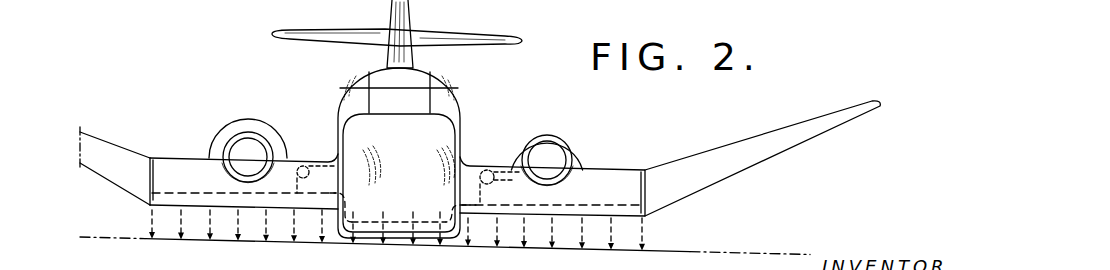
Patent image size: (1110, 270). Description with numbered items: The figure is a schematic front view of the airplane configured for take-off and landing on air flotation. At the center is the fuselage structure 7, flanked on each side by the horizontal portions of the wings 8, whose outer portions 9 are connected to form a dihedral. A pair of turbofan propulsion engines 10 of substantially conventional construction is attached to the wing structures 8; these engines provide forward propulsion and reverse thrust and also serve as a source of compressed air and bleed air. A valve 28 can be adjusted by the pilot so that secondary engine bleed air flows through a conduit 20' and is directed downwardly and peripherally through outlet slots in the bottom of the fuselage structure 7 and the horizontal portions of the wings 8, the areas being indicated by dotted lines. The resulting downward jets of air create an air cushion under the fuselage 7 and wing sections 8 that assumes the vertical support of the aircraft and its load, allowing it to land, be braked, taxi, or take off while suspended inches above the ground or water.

The fuselage structure 7 is at (398, 233).
The wing structure 8 is at (195, 207).
The outer portion of wing 9 is at (108, 153).
The turbofan propulsion engine 10 is at (247, 118).
The conduit 20' is at (392, 169).
The valve 28 is at (311, 167).